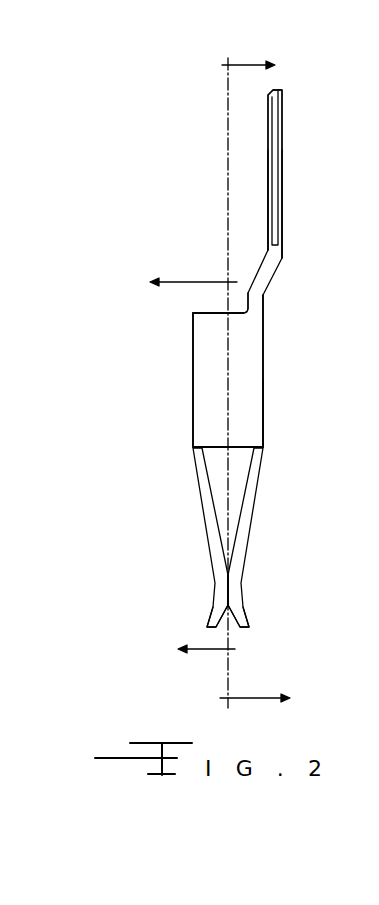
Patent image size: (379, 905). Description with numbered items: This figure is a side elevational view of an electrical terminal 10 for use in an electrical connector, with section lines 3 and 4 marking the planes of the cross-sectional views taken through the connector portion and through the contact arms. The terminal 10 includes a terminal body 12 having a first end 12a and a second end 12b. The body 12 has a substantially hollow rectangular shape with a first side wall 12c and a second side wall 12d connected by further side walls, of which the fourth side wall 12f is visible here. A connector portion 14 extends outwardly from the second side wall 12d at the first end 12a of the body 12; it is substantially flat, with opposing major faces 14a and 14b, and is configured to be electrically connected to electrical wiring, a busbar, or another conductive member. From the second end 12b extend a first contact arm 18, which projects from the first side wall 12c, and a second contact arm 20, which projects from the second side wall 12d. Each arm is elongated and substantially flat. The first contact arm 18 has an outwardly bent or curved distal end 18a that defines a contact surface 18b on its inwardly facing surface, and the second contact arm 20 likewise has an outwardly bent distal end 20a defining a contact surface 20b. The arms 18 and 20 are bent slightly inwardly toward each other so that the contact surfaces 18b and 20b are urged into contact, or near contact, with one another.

The electrical terminal 10 is at (171, 138).
The section line 3- 3 is at (264, 382).
The section line 4- 4 is at (185, 466).
The terminal body 12 is at (172, 363).
The first end 12a is at (193, 316).
The second end 12b is at (193, 451).
The first side wall 12c is at (193, 397).
The second side wall 12d is at (263, 345).
The fourth side wall 12f is at (250, 407).
The connector portion 14 is at (279, 122).
The major face 14a is at (268, 202).
The major face 14b is at (282, 202).
The first contact arm 18 is at (198, 482).
The distal end 18a is at (207, 620).
The contact surface 18b is at (228, 581).
The second contact arm 20 is at (258, 473).
The distal end 20a is at (249, 623).
The contact surface 20b is at (228, 579).